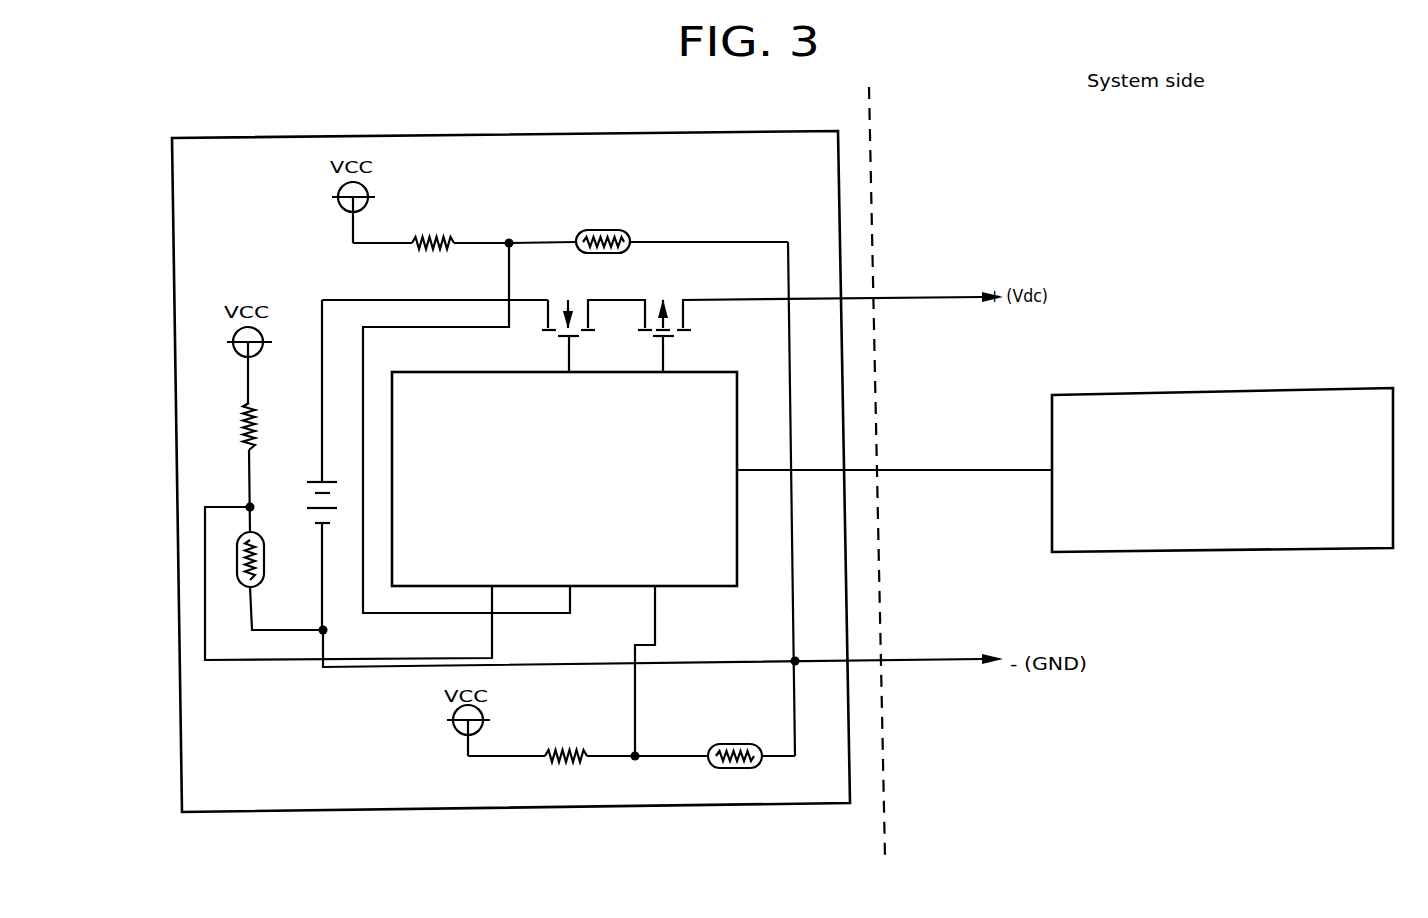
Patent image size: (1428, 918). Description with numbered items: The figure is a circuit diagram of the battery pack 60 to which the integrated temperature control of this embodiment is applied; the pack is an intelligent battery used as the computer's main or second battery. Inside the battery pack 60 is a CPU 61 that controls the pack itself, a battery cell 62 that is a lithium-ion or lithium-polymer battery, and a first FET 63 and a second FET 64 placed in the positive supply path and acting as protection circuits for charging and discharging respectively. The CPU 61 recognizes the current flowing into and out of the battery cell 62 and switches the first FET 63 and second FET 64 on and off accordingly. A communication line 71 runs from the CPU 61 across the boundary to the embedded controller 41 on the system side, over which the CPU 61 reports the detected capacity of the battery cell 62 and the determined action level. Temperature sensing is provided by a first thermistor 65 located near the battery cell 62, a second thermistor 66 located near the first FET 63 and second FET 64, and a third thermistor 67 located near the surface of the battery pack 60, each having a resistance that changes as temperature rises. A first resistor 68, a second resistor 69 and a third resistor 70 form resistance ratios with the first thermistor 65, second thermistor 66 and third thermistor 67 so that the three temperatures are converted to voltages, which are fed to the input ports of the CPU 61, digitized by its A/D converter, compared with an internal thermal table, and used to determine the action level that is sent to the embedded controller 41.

The embedded controller 41 is at (1103, 392).
The battery pack 60 is at (638, 133).
The CPU 61 is at (697, 587).
The battery cell 62 is at (338, 489).
The first FET (FET1) 63 is at (568, 300).
The second FET (FET2) 64 is at (663, 298).
The first thermistor (TH1) 65 is at (258, 585).
The second thermistor (TH2) 66 is at (625, 229).
The third thermistor (TH3) 67 is at (710, 747).
The first resistor 68 is at (238, 424).
The second resistor 69 is at (437, 231).
The third resistor 70 is at (563, 745).
The communication line 71 is at (923, 472).